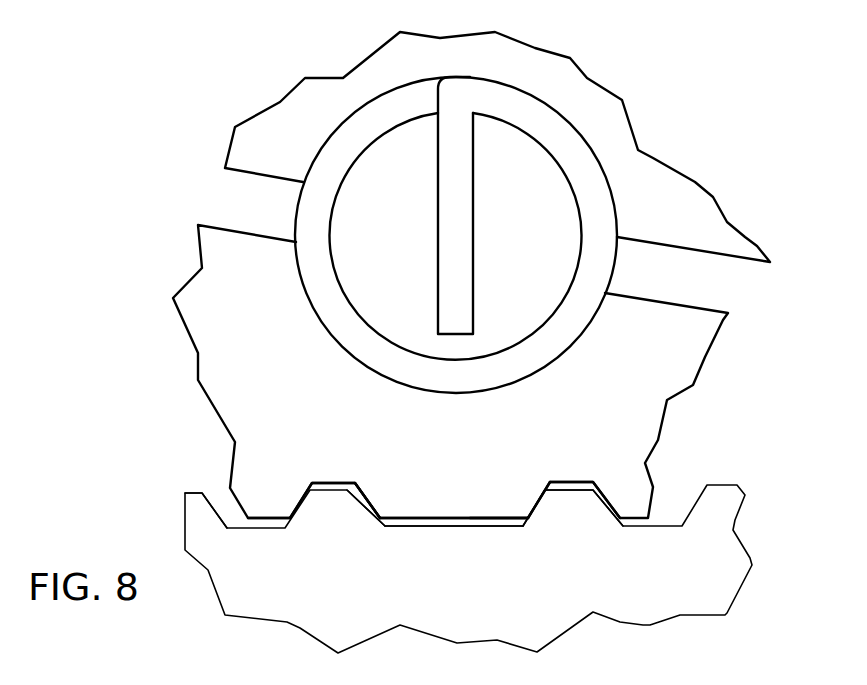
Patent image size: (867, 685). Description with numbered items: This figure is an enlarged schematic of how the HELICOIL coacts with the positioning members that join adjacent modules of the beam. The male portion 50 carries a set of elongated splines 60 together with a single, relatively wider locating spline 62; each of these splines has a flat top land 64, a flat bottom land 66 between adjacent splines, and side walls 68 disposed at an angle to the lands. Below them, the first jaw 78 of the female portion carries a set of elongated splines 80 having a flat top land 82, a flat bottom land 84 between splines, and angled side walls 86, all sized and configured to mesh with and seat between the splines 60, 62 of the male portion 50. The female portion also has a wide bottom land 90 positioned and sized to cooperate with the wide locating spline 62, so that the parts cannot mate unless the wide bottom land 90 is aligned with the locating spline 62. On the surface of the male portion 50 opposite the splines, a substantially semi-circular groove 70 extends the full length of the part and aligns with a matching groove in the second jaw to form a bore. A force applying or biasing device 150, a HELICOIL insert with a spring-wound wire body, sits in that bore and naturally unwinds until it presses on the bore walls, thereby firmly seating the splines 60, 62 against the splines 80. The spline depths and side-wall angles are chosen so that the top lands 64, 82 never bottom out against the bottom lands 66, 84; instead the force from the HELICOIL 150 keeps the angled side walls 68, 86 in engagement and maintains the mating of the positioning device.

The force applying or biasing device 150 is at (590, 180).
The semi-circular groove 70 is at (593, 313).
The male portion 50 is at (672, 357).
The first jaw 78 is at (657, 593).
The elongated splines 60 is at (270, 503).
The bottom land 66 is at (333, 497).
The side walls 68 is at (368, 494).
The top land 64 is at (443, 520).
The locating spline 62 is at (487, 515).
The top land 82 is at (578, 490).
The bottom land 84 is at (240, 527).
The side walls 86 is at (367, 515).
The wide bottom land 90 is at (425, 518).
The elongated splines 80 is at (572, 503).